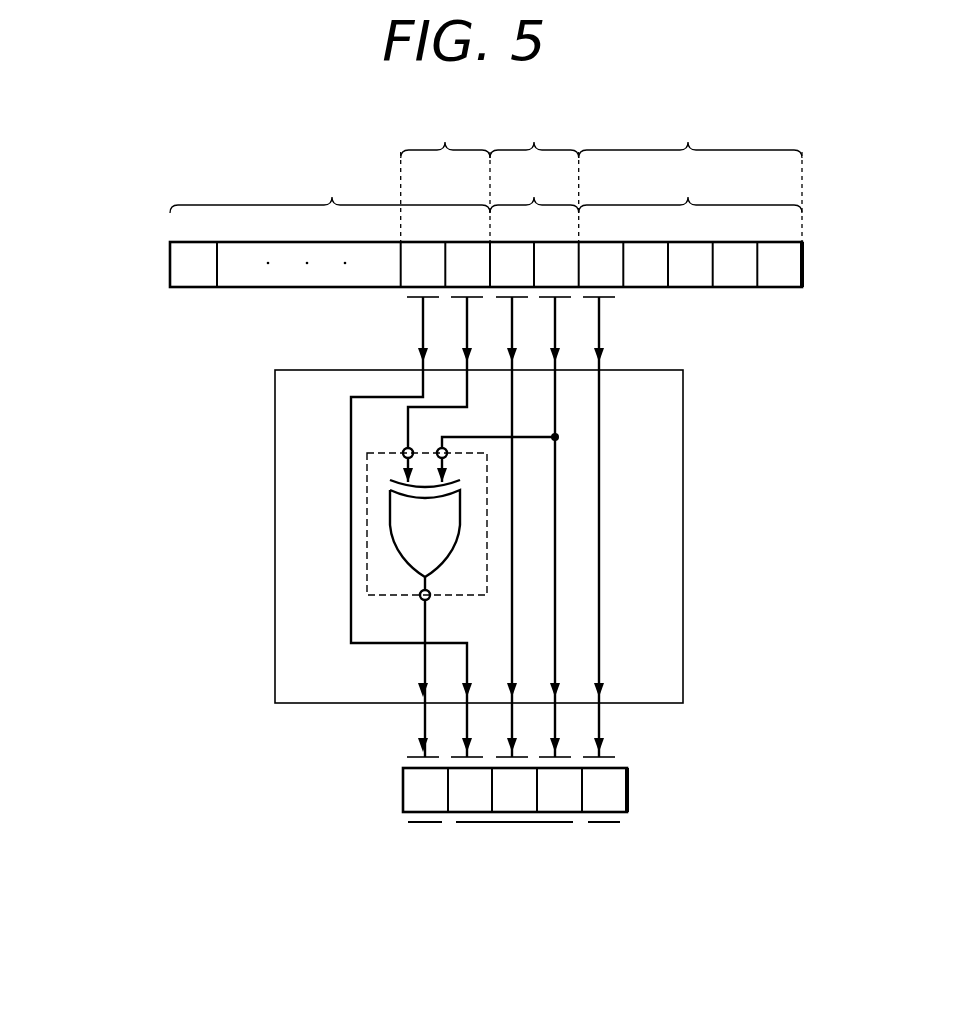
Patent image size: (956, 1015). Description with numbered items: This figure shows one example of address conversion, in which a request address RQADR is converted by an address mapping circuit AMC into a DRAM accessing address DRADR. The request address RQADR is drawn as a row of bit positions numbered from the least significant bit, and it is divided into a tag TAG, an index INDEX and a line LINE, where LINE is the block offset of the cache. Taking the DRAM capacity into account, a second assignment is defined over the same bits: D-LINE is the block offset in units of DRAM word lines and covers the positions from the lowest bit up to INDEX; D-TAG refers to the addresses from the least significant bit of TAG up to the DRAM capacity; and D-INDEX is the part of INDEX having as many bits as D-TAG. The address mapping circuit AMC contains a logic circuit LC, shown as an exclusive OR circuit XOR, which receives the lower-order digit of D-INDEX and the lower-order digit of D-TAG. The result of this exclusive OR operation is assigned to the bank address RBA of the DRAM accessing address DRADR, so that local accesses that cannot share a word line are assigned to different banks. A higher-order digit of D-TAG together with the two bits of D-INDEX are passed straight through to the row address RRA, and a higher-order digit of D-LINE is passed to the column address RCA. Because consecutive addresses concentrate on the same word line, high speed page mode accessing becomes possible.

The request address RQADR is at (170, 276).
The DRAM accessing address DRADR is at (403, 800).
The address mapping circuit AMC is at (683, 535).
The logic circuit LC is at (367, 481).
The exclusive OR circuit XOR is at (403, 525).
The tag TAG is at (330, 186).
The index INDEX is at (534, 188).
The line LINE is at (690, 188).
The element D-TAG is at (443, 134).
The element D-INDEX is at (540, 134).
The element D-LINE is at (690, 134).
The bank address RBA is at (428, 842).
The row address RRA is at (514, 842).
The column address RCA is at (607, 842).